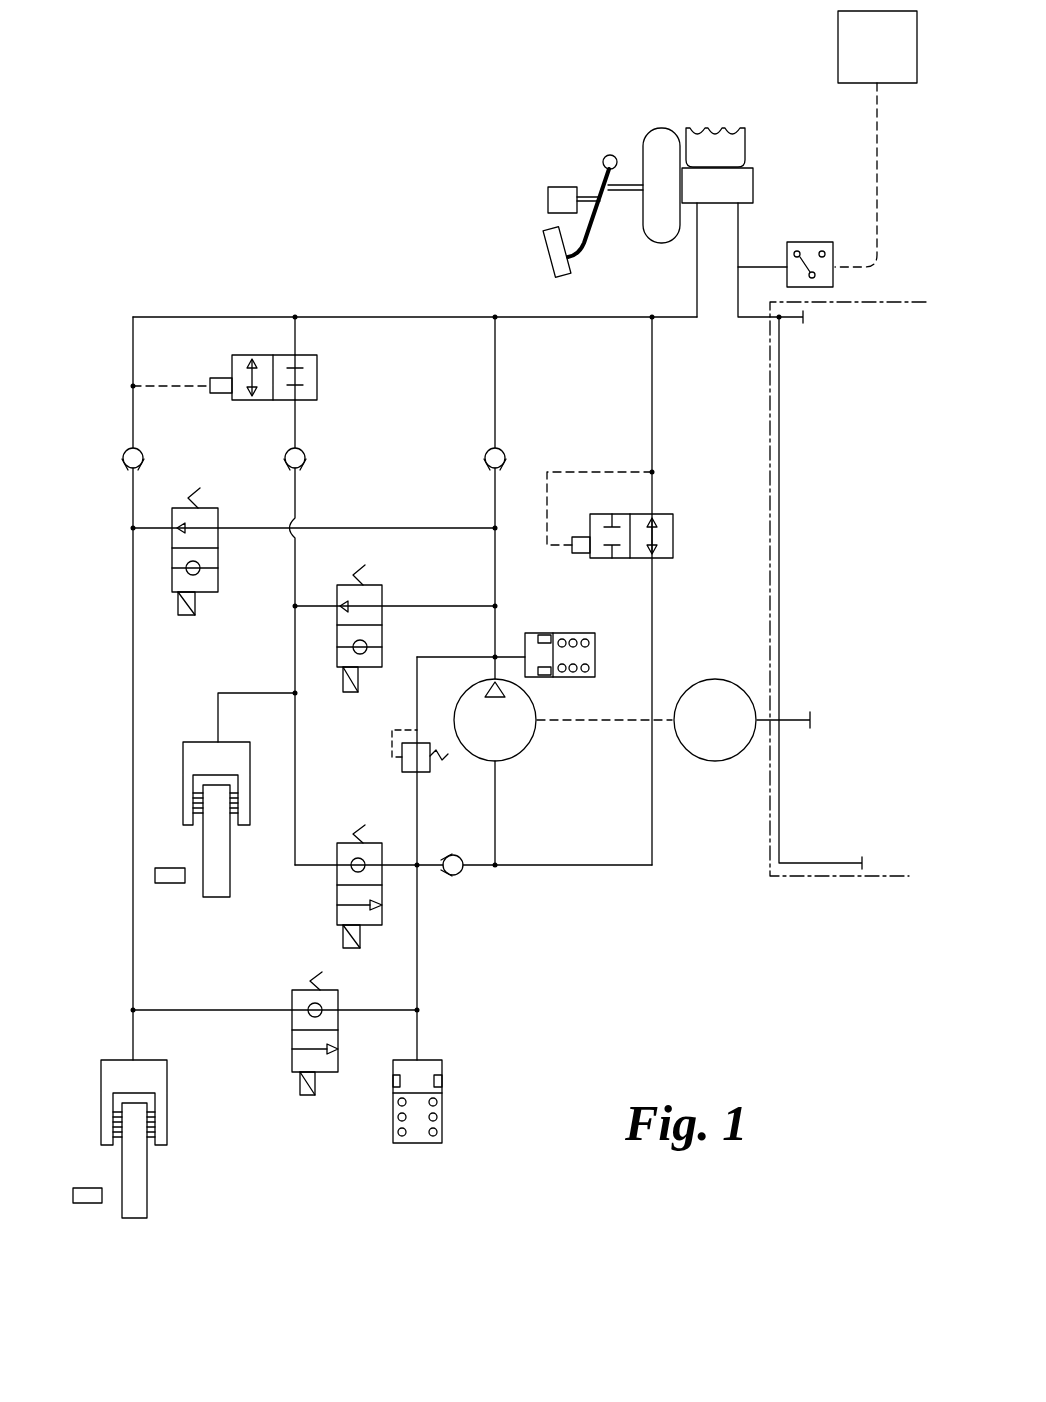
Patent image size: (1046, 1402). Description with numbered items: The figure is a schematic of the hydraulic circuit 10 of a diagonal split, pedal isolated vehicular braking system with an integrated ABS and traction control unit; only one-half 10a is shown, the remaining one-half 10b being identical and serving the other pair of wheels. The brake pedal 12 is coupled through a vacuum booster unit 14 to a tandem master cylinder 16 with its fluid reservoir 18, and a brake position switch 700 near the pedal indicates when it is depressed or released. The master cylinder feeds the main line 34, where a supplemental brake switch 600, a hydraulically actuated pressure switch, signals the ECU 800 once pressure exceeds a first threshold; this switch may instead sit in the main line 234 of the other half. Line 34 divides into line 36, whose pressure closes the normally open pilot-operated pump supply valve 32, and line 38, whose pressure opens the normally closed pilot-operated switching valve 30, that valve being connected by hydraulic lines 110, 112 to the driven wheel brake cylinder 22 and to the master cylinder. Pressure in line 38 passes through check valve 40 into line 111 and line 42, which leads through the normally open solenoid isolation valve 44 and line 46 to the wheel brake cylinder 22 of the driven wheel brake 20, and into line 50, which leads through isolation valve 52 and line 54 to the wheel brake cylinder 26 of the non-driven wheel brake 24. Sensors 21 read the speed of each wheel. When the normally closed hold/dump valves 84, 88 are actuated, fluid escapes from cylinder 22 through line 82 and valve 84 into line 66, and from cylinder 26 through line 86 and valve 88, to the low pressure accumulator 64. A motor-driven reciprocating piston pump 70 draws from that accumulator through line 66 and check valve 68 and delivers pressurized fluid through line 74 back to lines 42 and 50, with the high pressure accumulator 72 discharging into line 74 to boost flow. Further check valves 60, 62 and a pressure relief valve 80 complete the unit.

The hydraulic circuit 10 is at (404, 198).
The one-half of the system 10a is at (238, 278).
The remaining one-half of the brake system 10b is at (888, 291).
The brake pedal 12 is at (549, 247).
The vacuum booster unit 14 is at (657, 128).
The master cylinder 16 is at (750, 190).
The fluid reservoir 18 is at (743, 153).
The wheel brake 20 is at (218, 882).
The sensors 21 is at (175, 885).
The wheel brake cylinder 22 is at (193, 742).
The wheel brake 24 is at (140, 1183).
The wheel brake cylinder 26 is at (158, 1073).
The pilot operated switching valve 30 is at (337, 380).
The pump supply valve 32 is at (693, 540).
The main line 34 is at (681, 320).
The line 36 is at (652, 415).
The line 38 is at (415, 318).
The check valve 40 is at (507, 462).
The line 42 is at (408, 605).
The isolation valve 44 is at (382, 633).
The line 46 is at (295, 632).
The line 50 is at (370, 528).
The isolation valve 52 is at (172, 592).
The line 54 is at (133, 692).
The check valve 60 is at (132, 445).
The check valve 62 is at (307, 453).
The low pressure accumulator 64 is at (443, 1078).
The line 66 is at (418, 950).
The check valve 68 is at (465, 873).
The pump 70 is at (532, 743).
The high pressure accumulator 72 is at (570, 633).
The line 74 is at (497, 625).
The pressure relief valve 80 is at (430, 772).
The line 82 is at (295, 795).
The hold/dump valve 84 is at (337, 898).
The line 86 is at (207, 1010).
The hold/dump valve 88 is at (329, 1054).
The hydraulic line 110 is at (295, 415).
The line 111 is at (495, 375).
The hydraulic line 112 is at (295, 330).
The main line 234 is at (758, 321).
The supplemental brake switch 600 is at (835, 250).
The brake position switch 700 is at (550, 192).
The ECU 800 is at (838, 22).